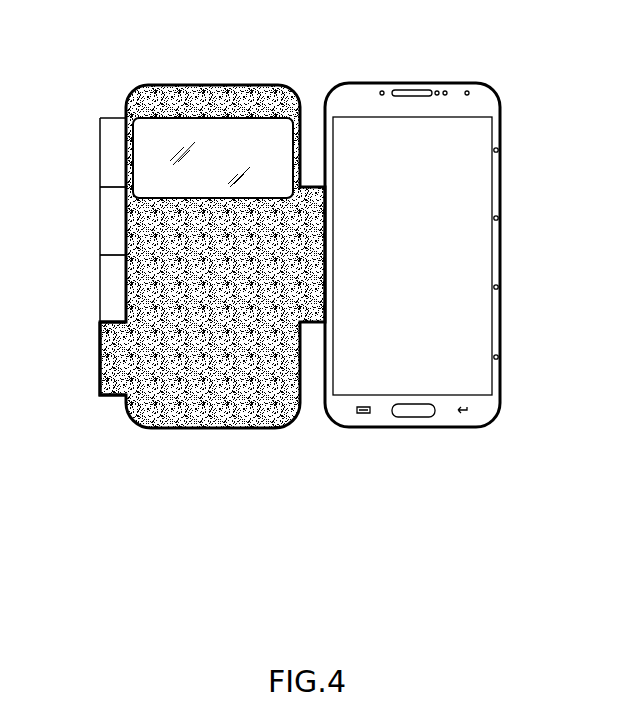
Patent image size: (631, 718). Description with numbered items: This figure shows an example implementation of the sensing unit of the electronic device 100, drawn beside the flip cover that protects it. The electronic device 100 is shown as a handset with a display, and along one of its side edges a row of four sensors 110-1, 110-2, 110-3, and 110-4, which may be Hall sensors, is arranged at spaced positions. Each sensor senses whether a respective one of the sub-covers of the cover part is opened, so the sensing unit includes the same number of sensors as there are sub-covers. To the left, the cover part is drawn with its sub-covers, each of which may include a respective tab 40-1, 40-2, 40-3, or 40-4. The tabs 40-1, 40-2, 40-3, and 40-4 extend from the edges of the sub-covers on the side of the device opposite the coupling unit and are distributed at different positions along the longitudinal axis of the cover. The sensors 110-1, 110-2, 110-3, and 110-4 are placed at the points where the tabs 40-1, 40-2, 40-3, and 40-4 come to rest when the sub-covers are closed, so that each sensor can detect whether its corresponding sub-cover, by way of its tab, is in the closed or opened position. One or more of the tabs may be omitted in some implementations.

The electronic device 100 is at (410, 82).
The tab 40-1 is at (104, 152).
The tab 40-2 is at (104, 224).
The tab 40-3 is at (104, 292).
The tab 40-4 is at (104, 360).
The sensor 110-1 is at (500, 150).
The sensor 110-2 is at (500, 218).
The sensor 110-3 is at (500, 287).
The sensor 110-4 is at (500, 357).